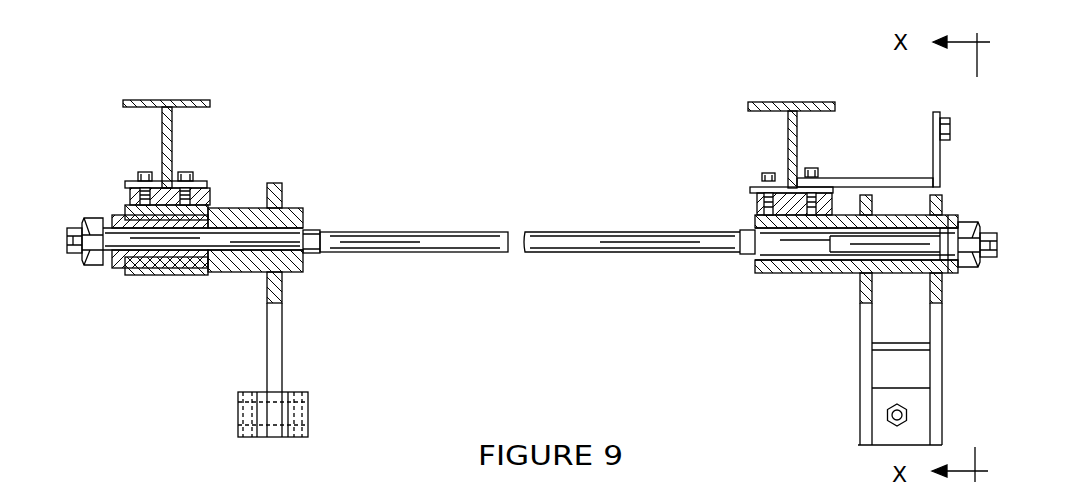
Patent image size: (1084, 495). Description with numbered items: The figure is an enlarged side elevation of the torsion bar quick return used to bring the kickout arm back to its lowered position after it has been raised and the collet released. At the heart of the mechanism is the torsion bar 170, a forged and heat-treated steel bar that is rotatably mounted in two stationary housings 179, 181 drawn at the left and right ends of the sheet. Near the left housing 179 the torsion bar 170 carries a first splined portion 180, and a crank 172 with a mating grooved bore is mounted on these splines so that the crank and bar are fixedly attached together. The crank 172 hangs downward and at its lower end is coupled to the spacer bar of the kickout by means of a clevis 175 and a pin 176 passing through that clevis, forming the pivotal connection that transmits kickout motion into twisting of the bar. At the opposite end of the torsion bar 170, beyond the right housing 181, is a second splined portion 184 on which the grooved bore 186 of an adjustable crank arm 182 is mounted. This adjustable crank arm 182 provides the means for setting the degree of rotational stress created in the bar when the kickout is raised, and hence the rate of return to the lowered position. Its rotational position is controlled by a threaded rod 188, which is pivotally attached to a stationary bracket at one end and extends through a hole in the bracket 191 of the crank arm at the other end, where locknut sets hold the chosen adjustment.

The torsion bar 170 is at (453, 232).
The crank 172 is at (282, 338).
The clevis 175 is at (308, 405).
The pin 176 is at (238, 433).
The stationary housing 179 is at (170, 277).
The first splined portion 180 is at (310, 227).
The stationary housing 181 is at (755, 218).
The adjustable crank arm 182 is at (858, 365).
The second splined portion 184 is at (940, 217).
The grooved bore 186 is at (833, 253).
The threaded rod 188 is at (887, 415).
The bracket 191 is at (868, 433).